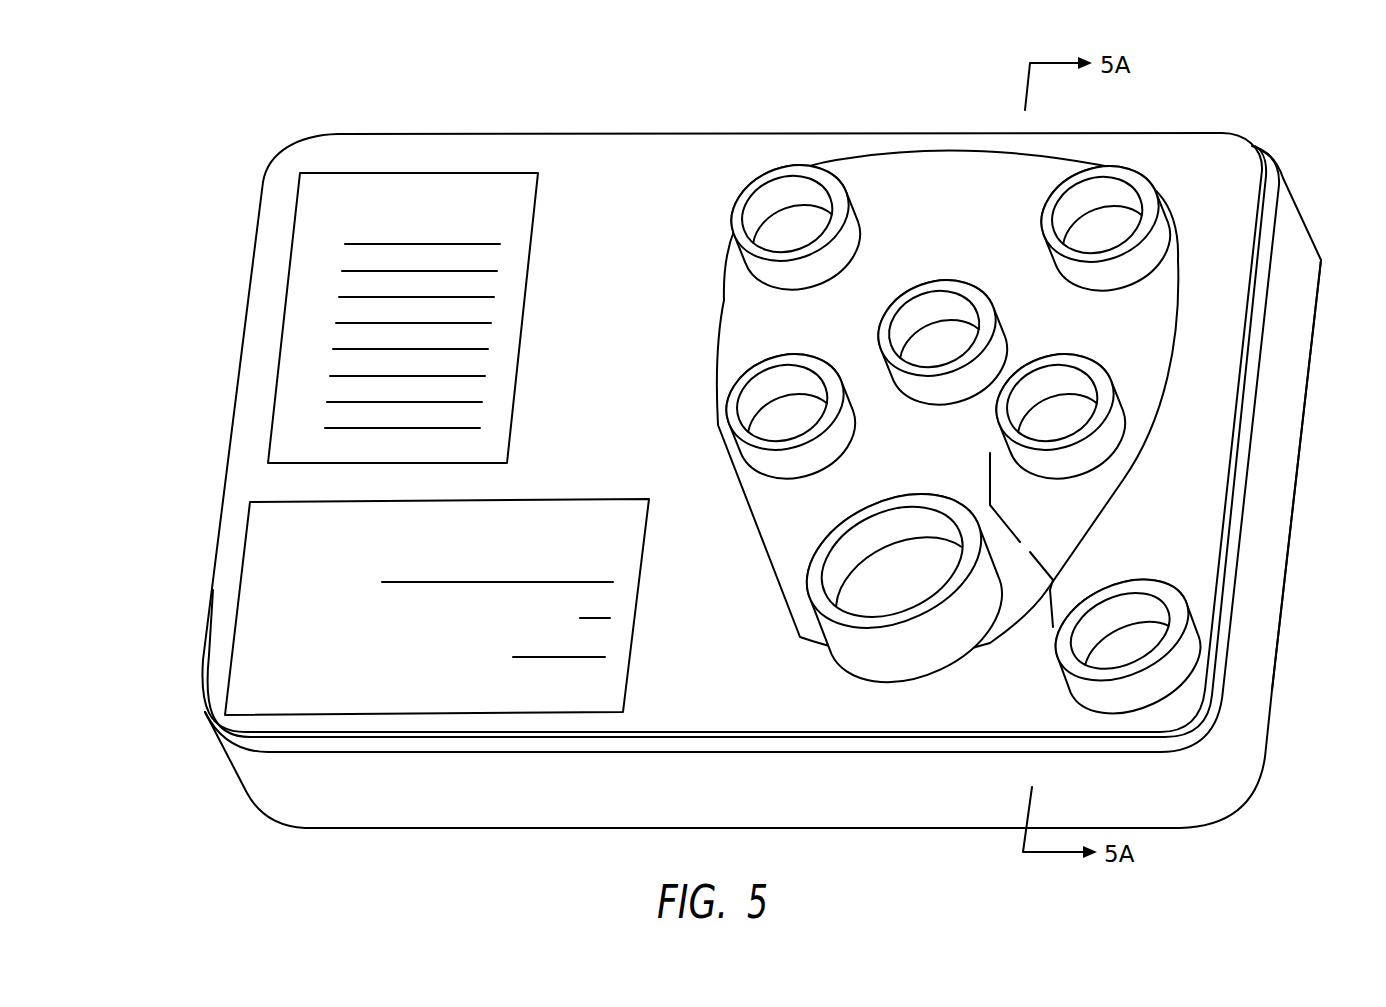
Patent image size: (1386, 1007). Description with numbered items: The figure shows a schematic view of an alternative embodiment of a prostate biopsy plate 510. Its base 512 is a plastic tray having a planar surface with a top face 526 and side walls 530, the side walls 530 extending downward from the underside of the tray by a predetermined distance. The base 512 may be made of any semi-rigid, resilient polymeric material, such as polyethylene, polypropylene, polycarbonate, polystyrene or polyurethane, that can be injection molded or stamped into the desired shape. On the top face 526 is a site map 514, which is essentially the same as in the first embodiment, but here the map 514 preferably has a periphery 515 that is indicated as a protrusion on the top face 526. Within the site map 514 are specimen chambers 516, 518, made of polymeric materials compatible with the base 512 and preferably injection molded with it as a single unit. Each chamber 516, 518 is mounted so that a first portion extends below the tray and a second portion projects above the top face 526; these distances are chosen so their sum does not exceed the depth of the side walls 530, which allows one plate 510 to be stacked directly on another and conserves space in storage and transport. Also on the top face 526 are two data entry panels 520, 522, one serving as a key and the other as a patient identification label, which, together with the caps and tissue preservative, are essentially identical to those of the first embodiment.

The prostate biopsy plate 510 is at (1195, 118).
The base 512 is at (743, 157).
The site map 514 is at (740, 330).
The periphery 515 is at (718, 372).
The specimen chamber 516 is at (837, 443).
The specimen chamber 518 is at (1173, 642).
The data entry panel 520 is at (530, 251).
The data entry panel 522 is at (628, 609).
The top face 526 is at (1202, 480).
The side walls 530 is at (1270, 543).